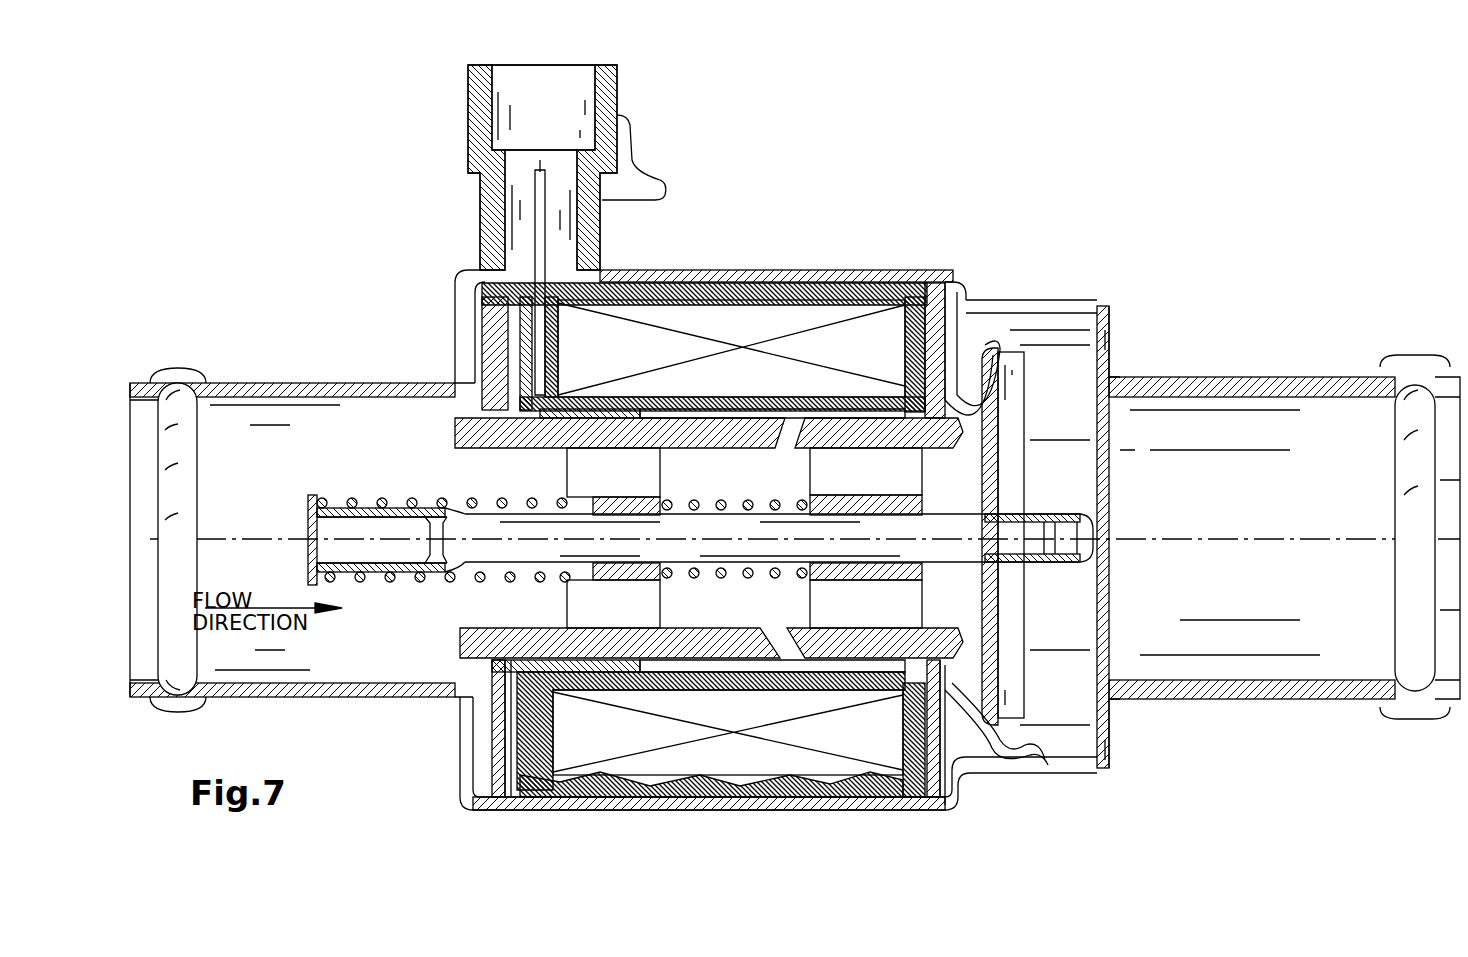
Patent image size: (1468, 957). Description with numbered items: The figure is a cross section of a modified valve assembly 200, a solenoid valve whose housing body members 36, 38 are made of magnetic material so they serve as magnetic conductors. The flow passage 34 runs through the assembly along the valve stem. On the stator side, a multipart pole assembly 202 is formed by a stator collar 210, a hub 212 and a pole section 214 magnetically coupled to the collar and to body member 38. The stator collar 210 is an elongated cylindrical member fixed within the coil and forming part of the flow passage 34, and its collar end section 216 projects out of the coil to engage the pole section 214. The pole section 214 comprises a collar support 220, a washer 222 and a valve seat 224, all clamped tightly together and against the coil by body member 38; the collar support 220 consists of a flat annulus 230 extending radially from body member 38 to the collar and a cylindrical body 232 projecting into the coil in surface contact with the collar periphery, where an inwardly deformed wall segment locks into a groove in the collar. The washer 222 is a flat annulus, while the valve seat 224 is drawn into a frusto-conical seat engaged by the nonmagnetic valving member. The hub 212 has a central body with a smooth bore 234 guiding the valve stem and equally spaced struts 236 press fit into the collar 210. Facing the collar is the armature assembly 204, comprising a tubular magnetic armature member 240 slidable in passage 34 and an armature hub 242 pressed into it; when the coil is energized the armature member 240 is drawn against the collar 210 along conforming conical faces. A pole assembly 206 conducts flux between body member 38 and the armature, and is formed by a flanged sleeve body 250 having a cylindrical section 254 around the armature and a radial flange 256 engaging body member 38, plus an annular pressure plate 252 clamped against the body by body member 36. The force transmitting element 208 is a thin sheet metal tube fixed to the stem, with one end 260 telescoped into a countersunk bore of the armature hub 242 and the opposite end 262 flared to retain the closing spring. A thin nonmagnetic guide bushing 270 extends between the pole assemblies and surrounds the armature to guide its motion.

The body member 36 is at (430, 383).
The body member 38 is at (850, 270).
The modified valve assembly 200 is at (1068, 238).
The pole section 214 is at (952, 278).
The guide bushing 270 is at (837, 470).
The magnetic armature member 240 is at (603, 433).
The multipart pole assembly 202 is at (958, 434).
The armature assembly 204 is at (516, 628).
The struts 236 is at (833, 470).
The cylindrical body 232 is at (850, 495).
The tube end 260 is at (593, 497).
The flow passage 34 is at (735, 487).
The smooth bore 234 is at (900, 520).
The flared tube end 262 is at (310, 495).
The force transmitting element 208 is at (380, 505).
The armature hub 242 is at (566, 500).
The hub 212 is at (808, 603).
The stator collar 210 is at (960, 612).
The collar end section 216 is at (935, 660).
The annular pressure plate 252 is at (470, 805).
The pole assembly 206 is at (495, 720).
The cylindrical section 254 is at (495, 662).
The radial flange 256 is at (527, 790).
The flanged sleeve body 250 is at (603, 700).
The collar support 220 is at (870, 780).
The flat annulus 230 is at (930, 810).
The washer 222 is at (975, 760).
The valve seat 224 is at (1010, 745).